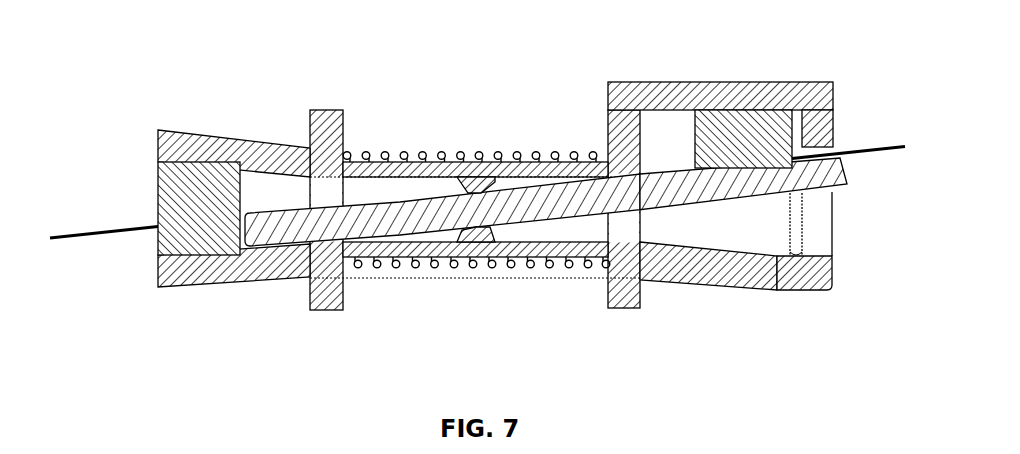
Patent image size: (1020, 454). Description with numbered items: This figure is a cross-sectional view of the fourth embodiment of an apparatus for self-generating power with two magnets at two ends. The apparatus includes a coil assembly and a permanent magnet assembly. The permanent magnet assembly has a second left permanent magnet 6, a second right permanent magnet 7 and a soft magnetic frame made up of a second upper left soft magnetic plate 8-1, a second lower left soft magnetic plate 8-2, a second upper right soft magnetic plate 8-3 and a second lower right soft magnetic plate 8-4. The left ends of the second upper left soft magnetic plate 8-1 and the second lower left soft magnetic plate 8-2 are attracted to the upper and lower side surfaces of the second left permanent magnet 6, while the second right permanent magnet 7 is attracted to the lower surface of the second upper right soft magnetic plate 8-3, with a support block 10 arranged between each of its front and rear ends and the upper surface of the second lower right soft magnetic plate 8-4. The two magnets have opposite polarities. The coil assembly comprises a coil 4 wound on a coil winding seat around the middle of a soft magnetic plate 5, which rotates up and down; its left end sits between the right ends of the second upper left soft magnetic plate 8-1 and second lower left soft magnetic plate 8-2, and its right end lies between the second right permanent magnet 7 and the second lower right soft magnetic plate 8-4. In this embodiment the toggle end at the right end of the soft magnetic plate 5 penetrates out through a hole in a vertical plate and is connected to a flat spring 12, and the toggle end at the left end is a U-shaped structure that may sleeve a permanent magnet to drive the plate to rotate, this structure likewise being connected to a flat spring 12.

The coil 4 is at (546, 193).
The soft magnetic plate 5 is at (395, 262).
The second left permanent magnet 6 is at (165, 187).
The second right permanent magnet 7 is at (715, 152).
The second upper left soft magnetic plate 8-1 is at (210, 142).
The second lower left soft magnetic plate 8-2 is at (227, 267).
The second upper right soft magnetic plate 8-3 is at (725, 93).
The second lower right soft magnetic plate 8-4 is at (728, 273).
The support block 10 is at (775, 230).
The flat spring 12 is at (120, 232).